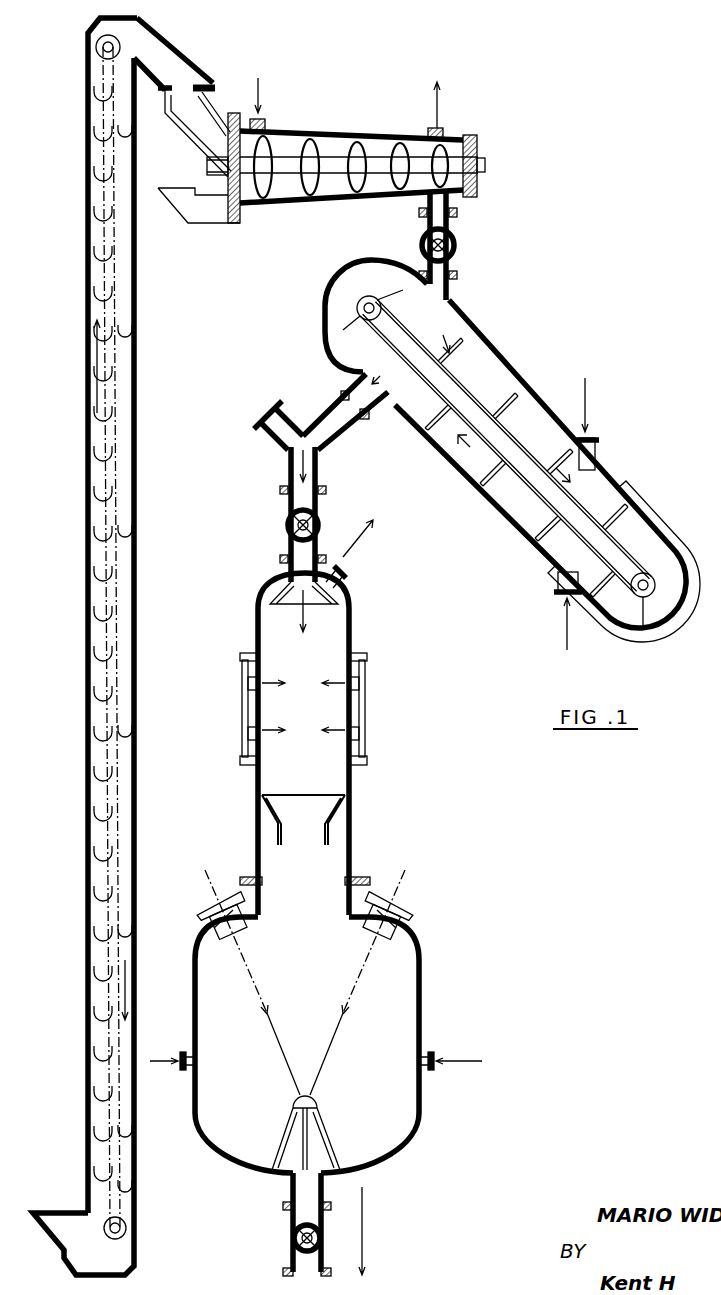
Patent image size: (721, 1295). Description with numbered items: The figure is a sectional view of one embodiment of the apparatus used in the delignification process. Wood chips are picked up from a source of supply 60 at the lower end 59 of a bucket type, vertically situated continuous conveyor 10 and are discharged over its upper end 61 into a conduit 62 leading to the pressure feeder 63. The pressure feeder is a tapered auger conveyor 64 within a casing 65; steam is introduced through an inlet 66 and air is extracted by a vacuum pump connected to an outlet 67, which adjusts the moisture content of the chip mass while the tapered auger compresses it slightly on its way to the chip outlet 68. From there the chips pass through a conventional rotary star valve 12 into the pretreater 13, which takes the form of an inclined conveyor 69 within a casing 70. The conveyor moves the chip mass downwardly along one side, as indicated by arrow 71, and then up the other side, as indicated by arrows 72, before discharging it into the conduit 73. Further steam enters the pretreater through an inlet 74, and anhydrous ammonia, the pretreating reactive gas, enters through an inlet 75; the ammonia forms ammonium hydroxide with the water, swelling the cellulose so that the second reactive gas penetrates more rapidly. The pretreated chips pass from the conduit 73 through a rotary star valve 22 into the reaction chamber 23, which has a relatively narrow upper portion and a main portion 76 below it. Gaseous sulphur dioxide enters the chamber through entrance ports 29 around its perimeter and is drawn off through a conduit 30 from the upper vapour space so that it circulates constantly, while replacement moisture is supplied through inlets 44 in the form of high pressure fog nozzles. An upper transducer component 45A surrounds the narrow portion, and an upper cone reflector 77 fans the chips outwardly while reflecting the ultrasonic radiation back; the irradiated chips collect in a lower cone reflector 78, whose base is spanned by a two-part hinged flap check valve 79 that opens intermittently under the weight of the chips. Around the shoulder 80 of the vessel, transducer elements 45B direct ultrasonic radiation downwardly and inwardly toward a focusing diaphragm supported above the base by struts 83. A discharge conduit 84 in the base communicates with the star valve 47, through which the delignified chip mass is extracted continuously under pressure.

The conveyor 10 is at (85, 525).
The upper end 61 is at (143, 30).
The conduit 62 is at (172, 53).
The source of supply 60 is at (85, 1215).
The lower end 59 is at (75, 1258).
The pressure feeder 63 is at (312, 130).
The tapered auger conveyor 64 is at (293, 192).
The casing 65 is at (345, 195).
The inlet 66 is at (268, 120).
The outlet 67 is at (431, 125).
The chip outlet 68 is at (418, 213).
The rotary star valve 12 is at (457, 238).
The pretreater 13 is at (503, 386).
The inclined conveyor 69 is at (492, 512).
The arrow 71 is at (541, 442).
The arrows 72 is at (455, 458).
The casing 70 is at (630, 494).
The inlet 74 is at (590, 438).
The inlet 75 is at (553, 580).
The conduit 73 is at (330, 410).
The rotary star valve 22 is at (286, 525).
The reaction chamber 23 is at (352, 600).
The upper cone reflector 77 is at (272, 598).
The conduit 30 is at (352, 567).
The upper transducer component 45A is at (377, 689).
The lower cone reflector 78 is at (350, 808).
The check valve 79 is at (282, 833).
The main portion 76 is at (421, 970).
The transducer elements 45B is at (400, 896).
The shoulder 80 is at (412, 935).
The entrance ports 29 is at (181, 1063).
The inlets 44 is at (437, 1066).
The struts 83 is at (340, 1142).
The discharge conduit 84 is at (290, 1195).
The star valve 47 is at (294, 1233).